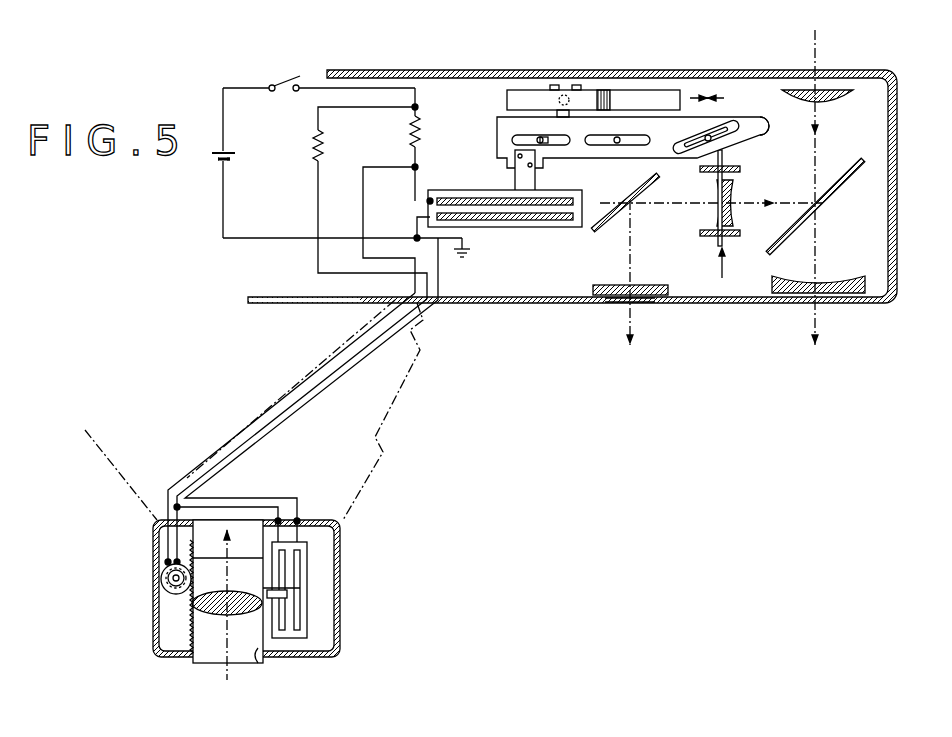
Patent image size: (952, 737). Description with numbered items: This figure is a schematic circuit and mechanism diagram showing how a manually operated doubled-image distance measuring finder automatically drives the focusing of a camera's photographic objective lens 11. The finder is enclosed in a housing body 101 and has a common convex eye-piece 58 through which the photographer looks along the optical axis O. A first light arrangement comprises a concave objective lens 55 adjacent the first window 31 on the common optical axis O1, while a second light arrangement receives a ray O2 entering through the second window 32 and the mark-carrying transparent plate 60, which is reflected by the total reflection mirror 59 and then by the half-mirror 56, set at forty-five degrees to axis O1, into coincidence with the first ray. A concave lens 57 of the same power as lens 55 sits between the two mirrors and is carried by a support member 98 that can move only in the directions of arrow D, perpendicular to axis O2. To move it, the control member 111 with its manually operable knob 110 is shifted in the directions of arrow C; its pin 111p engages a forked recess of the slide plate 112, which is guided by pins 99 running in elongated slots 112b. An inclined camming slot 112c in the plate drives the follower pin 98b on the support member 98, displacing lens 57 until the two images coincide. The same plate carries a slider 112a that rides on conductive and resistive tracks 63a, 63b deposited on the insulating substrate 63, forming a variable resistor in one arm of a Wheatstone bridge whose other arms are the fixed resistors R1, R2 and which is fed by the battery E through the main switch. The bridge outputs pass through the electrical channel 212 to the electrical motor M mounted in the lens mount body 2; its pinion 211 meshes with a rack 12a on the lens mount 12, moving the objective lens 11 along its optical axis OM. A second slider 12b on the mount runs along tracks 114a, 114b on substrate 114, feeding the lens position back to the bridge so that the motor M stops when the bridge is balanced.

The housing 101 is at (783, 54).
The first window 31 is at (845, 302).
The second window 32 is at (648, 301).
The optical axis O is at (815, 172).
The optical axis of the first light arrangement O1 is at (818, 353).
The optical axis of the second light arrangement O2 is at (632, 286).
The eye-piece 58 is at (843, 104).
The half-mirror 56 is at (838, 188).
The objective lens 55 is at (851, 277).
The total reflection mirror 59 is at (640, 198).
The mark-carrying transparent plate 60 is at (610, 298).
The concave lens 57 is at (735, 193).
The support member 98 is at (725, 159).
The arrow D is at (719, 272).
The slide plate 112 is at (497, 120).
The camming slot 112c is at (762, 127).
The guide pins 99 is at (512, 140).
The elongated slots 112b is at (597, 147).
The follower pin 98b is at (720, 130).
The slider 112a is at (530, 228).
The control member 111 is at (289, 78).
The manually operable knob 110 is at (603, 90).
The pin 111p is at (565, 94).
The arrow C is at (708, 96).
The insulating substrate 63 is at (572, 228).
The linear track 63a is at (480, 197).
The linear track 63b is at (486, 228).
The battery E is at (218, 160).
The fixed resistor R1 is at (427, 144).
The fixed resistor R2 is at (370, 203).
The electrical channel 212 is at (349, 364).
The lens mount body 2 is at (330, 631).
The lens mount 12 is at (253, 663).
The optical axis OM is at (235, 618).
The photographic objective lens 11 is at (218, 614).
The rack 12a is at (190, 610).
The pinion 211 is at (173, 592).
The electrical motor M is at (160, 578).
The insulating substrate 114 is at (305, 632).
The linear track 114a is at (285, 553).
The linear track 114b is at (300, 571).
The slider 12b is at (302, 589).